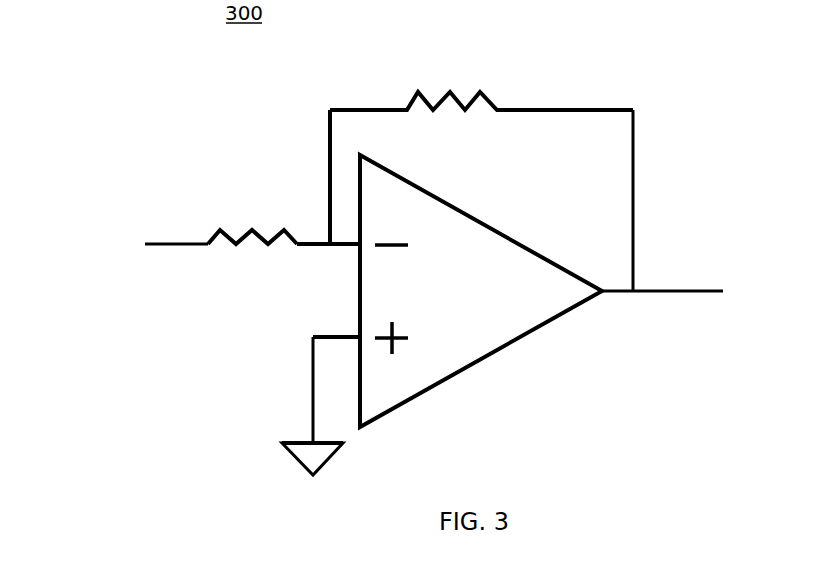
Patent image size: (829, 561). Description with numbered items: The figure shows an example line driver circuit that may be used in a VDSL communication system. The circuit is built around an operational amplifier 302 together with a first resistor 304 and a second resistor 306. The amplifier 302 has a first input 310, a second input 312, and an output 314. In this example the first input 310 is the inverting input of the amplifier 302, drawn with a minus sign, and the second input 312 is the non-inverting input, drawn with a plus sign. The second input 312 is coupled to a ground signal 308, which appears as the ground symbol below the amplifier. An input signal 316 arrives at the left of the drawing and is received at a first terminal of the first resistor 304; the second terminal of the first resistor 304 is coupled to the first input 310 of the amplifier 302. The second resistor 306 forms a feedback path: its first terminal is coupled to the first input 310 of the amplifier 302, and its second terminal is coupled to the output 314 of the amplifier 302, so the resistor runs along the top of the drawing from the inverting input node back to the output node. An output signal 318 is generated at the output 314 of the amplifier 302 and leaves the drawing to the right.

The operational amplifier 302 is at (485, 222).
The first resistor 304 is at (248, 230).
The second resistor 306 is at (418, 92).
The ground signal 308 is at (302, 438).
The first input 310 is at (353, 240).
The second input 312 is at (357, 327).
The output 314 is at (603, 290).
The input signal 316 is at (160, 243).
The output signal 318 is at (675, 283).